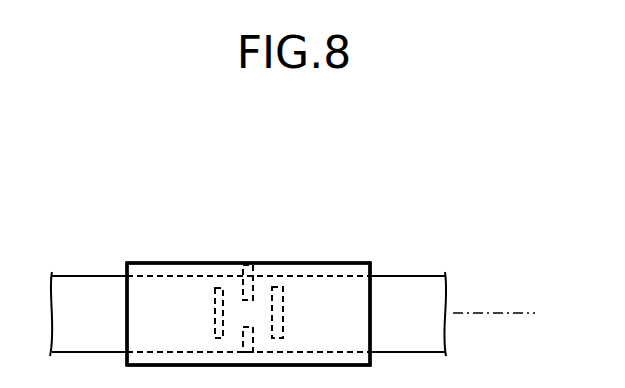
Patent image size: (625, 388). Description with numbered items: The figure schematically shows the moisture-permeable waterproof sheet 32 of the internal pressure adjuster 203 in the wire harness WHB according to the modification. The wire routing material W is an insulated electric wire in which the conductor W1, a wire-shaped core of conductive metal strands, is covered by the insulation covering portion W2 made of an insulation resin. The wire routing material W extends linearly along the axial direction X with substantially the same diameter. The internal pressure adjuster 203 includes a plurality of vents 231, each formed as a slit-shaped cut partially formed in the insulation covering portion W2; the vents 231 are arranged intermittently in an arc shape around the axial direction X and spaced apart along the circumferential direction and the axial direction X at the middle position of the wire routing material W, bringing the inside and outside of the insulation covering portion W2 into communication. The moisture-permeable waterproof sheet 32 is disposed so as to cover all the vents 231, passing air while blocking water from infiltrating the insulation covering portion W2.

The internal pressure adjuster 203 is at (168, 182).
The moisture-permeable waterproof sheet 32 is at (182, 262).
The vent 231 is at (240, 325).
The wire harness WHB is at (126, 242).
The wire routing material W is at (360, 182).
The conductor W1 is at (388, 300).
The insulation covering portion W2 is at (433, 270).
The axial direction X is at (512, 311).